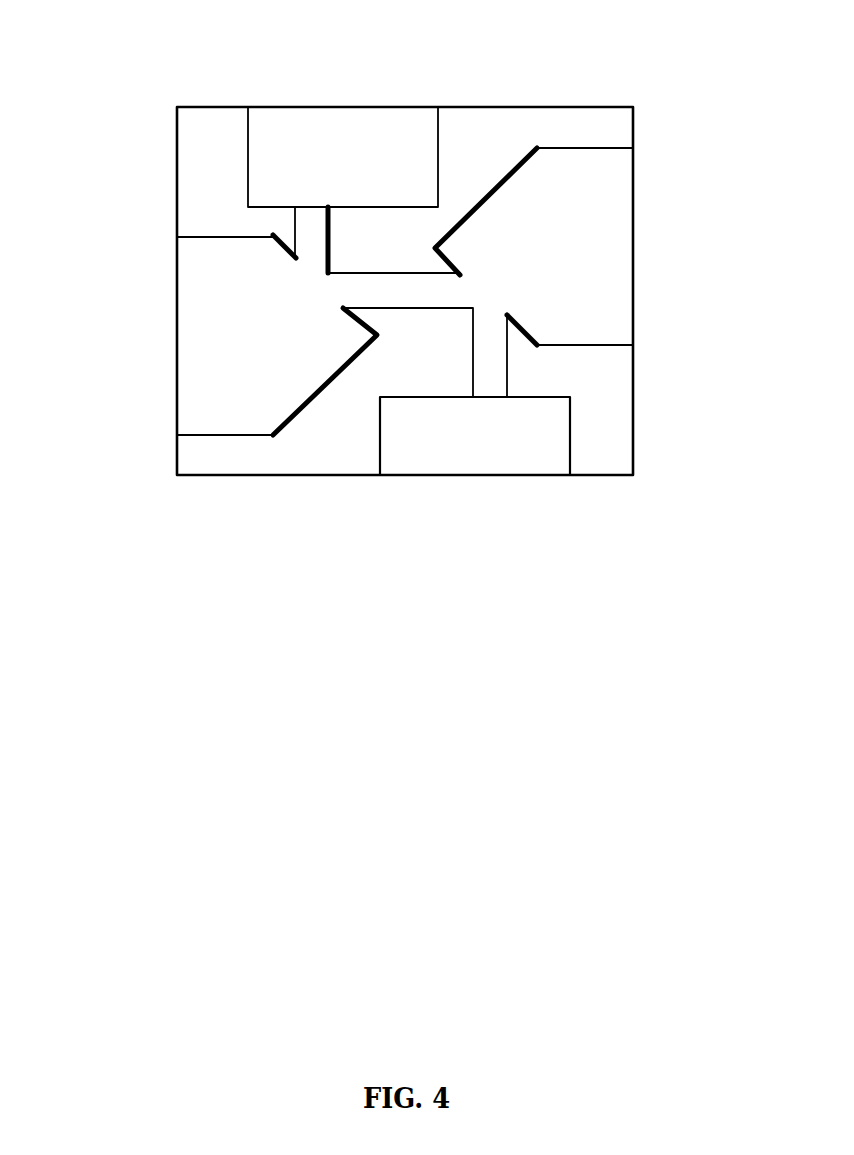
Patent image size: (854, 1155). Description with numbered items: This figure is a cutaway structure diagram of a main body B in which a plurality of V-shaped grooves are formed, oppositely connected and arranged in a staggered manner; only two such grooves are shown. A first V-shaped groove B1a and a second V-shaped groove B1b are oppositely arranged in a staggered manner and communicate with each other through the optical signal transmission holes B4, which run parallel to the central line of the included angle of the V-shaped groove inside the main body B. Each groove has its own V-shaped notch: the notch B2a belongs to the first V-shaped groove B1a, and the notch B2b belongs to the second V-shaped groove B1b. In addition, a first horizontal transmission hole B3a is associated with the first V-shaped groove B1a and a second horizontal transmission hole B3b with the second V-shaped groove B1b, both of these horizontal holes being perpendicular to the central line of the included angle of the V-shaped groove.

The main body B is at (310, 453).
The first V-shaped groove B1a is at (323, 380).
The second V-shaped groove B1b is at (515, 165).
The V-shaped notch of the first V-shaped groove B2a is at (195, 433).
The V-shaped notch of the second V-shaped groove B2b is at (602, 150).
The first horizontal transmission hole B3a is at (314, 223).
The second horizontal transmission hole B3b is at (490, 368).
The optical signal transmission holes B4 is at (405, 293).